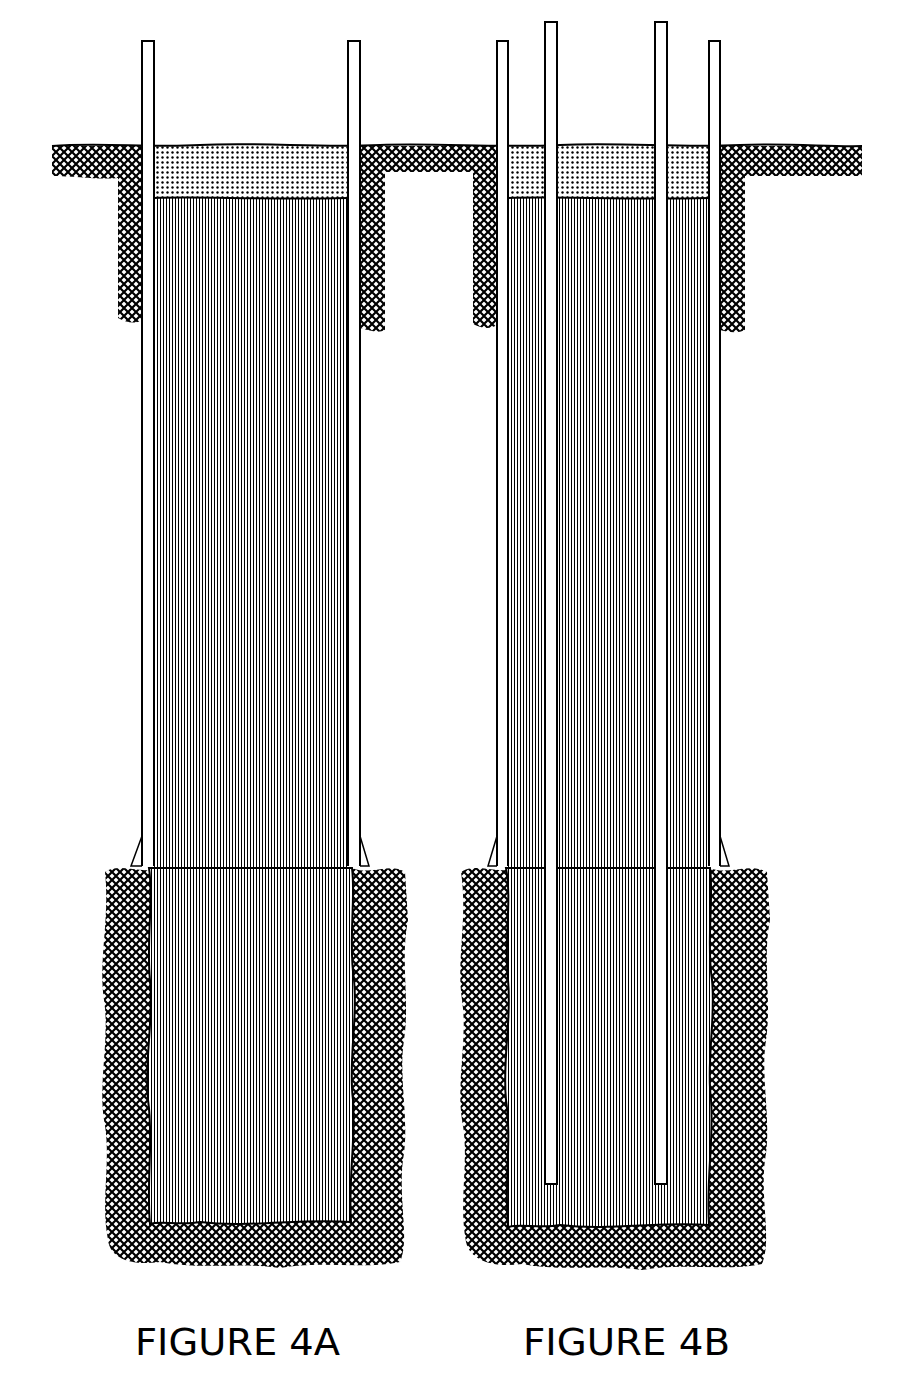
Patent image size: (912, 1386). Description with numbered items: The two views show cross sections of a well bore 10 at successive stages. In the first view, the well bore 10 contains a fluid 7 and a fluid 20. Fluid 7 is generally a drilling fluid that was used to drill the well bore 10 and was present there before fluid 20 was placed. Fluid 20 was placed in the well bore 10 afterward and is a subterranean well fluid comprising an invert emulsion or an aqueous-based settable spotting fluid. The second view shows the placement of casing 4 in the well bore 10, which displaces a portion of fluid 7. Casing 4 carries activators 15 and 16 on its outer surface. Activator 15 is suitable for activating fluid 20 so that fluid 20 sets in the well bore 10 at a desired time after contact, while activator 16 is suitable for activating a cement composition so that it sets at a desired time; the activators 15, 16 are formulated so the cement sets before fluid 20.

In FIG. 4B, the casing 4 is at (765, 592).
In FIG. 4A, the fluid 7 is at (205, 160).
In FIG. 4B, the fluid 7 is at (682, 163).
In FIG. 4A, the well bore 10 is at (142, 105).
In FIG. 4B, the well bore 10 is at (717, 100).
In FIG. 4B, the activator 15 is at (540, 433).
In FIG. 4B, the activator 16 is at (670, 433).
In FIG. 4A, the fluid 20 is at (253, 608).
In FIG. 4B, the fluid 20 is at (522, 620).